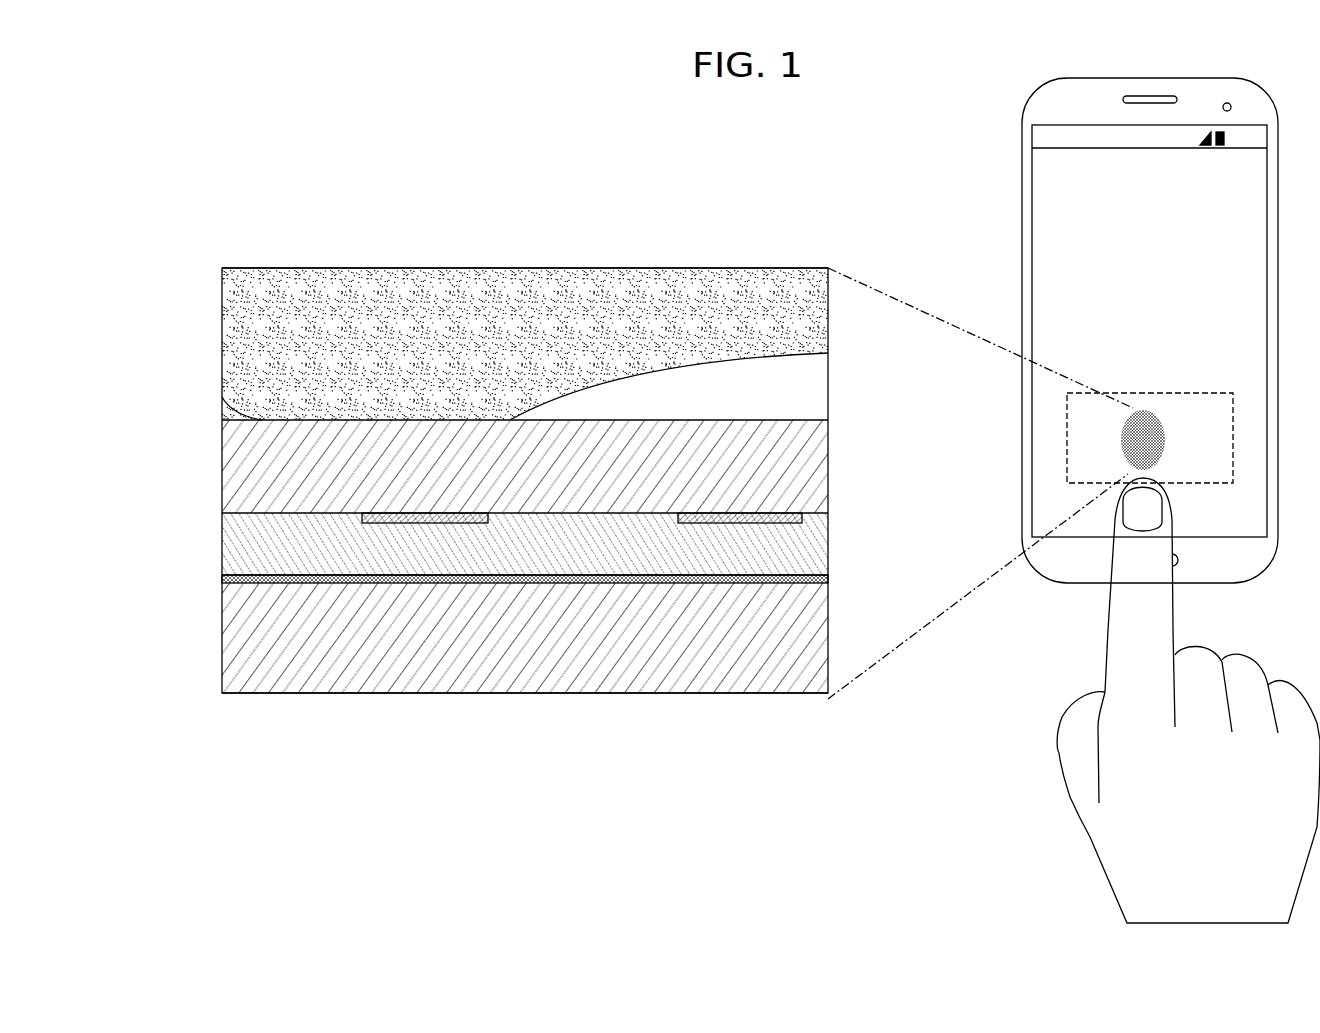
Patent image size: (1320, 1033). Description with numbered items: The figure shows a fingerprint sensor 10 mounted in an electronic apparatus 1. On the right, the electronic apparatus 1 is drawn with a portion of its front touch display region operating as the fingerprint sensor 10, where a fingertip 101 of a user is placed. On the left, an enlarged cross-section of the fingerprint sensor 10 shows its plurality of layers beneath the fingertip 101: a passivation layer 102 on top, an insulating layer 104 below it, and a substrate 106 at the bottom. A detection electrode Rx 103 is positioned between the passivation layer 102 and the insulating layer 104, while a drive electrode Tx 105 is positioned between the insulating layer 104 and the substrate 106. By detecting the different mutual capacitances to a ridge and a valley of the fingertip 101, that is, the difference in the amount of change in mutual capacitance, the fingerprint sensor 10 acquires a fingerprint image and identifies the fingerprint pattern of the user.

The electronic apparatus 1 is at (1253, 90).
The fingerprint sensor 10 is at (668, 215).
The fingertip 101 is at (245, 330).
The passivation layer 102 is at (245, 457).
The detection electrode Rx 103 is at (362, 514).
The insulating layer 104 is at (245, 547).
The drive electrode Tx 105 is at (235, 578).
The substrate 106 is at (245, 648).